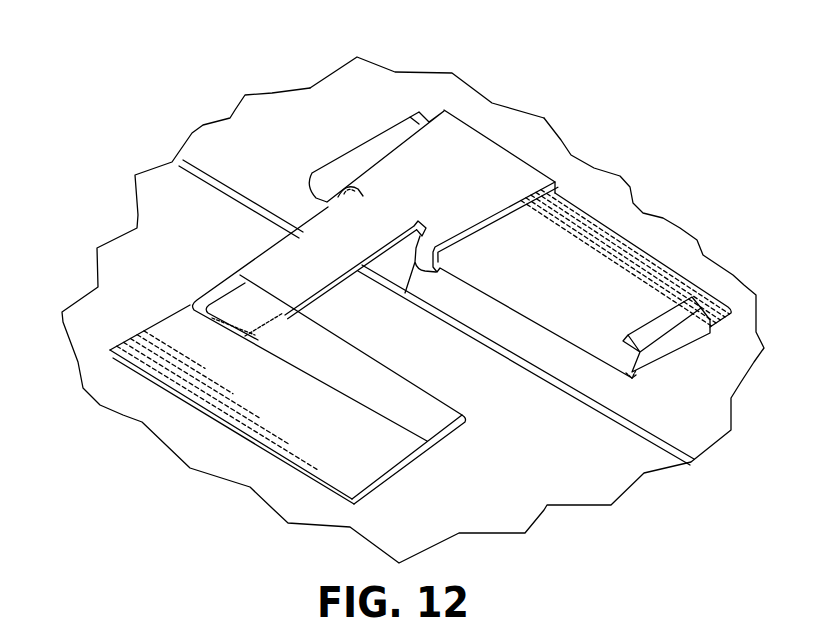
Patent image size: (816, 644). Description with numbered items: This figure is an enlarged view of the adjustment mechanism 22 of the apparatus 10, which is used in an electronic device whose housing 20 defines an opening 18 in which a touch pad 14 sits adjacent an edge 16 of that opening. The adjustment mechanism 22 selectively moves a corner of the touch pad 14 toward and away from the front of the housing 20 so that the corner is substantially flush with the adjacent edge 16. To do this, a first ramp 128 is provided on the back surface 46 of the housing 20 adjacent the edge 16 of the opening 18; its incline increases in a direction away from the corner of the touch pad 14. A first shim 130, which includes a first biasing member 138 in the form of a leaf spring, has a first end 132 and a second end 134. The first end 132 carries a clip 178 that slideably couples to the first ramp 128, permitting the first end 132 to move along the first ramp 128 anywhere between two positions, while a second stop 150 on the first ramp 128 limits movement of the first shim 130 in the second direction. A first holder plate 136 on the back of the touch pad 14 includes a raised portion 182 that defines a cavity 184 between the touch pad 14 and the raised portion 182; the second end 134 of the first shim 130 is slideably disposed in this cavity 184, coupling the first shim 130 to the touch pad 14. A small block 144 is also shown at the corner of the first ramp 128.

The apparatus 10 is at (420, 284).
The touch pad 14 is at (409, 297).
The edge 16 is at (250, 220).
The opening 18 is at (230, 186).
The housing 20 is at (420, 295).
The adjustment mechanism 22 is at (654, 239).
The back surface 46 is at (433, 88).
The first ramp 128 is at (582, 277).
The first shim 130 is at (306, 220).
The first end 132 is at (432, 144).
The second end 134 is at (229, 333).
The first holder plate 136 is at (320, 389).
The first biasing member 138 is at (316, 300).
The clip 144 is at (654, 318).
The second stop 150 is at (372, 139).
The clip 178 is at (400, 293).
The raised portion 182 is at (419, 405).
The cavity 184 is at (462, 432).